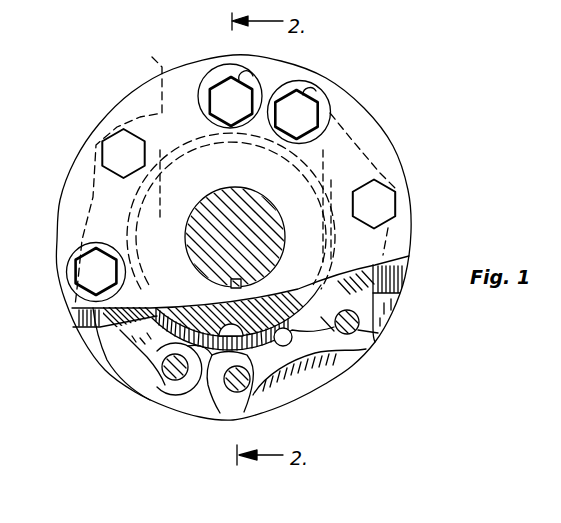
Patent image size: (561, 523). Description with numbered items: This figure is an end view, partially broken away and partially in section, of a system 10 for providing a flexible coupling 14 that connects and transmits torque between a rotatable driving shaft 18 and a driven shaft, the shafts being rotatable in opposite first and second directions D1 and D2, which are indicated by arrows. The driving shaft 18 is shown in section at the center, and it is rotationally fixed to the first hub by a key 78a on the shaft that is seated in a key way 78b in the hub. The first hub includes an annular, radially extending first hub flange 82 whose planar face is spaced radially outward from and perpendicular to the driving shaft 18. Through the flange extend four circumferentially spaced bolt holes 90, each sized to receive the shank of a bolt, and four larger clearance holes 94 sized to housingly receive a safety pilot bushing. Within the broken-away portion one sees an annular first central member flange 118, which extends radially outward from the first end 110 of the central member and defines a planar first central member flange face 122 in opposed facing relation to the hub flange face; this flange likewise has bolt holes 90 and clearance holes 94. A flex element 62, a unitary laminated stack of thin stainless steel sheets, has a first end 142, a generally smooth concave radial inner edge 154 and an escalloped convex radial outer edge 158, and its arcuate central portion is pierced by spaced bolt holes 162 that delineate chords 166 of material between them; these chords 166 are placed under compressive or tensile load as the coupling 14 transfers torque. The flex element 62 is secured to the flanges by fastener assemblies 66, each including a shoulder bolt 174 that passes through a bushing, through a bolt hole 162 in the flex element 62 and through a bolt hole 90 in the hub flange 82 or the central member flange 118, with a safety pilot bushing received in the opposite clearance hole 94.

The system 10 is at (422, 54).
The flexible coupling 14 is at (440, 110).
The driving shaft 18 is at (248, 193).
The flex element 62 is at (368, 350).
The fastener assembly 66 is at (88, 262).
The key 78a is at (236, 279).
The key way 78b is at (238, 294).
The first hub flange 82 is at (363, 122).
The bolt hole 90 is at (358, 318).
The clearance hole 94 is at (249, 76).
The first end of the central member 110 is at (250, 350).
The first central member flange 118 is at (303, 404).
The first central member flange face 122 is at (334, 374).
The first end of the flex element 142 is at (198, 403).
The radial inner edge 154 is at (279, 334).
The radial outer edge 158 is at (376, 296).
The bolt hole 162 is at (360, 332).
The chord 166 is at (70, 328).
The shoulder bolt 174 is at (221, 76).
The first direction D1 is at (457, 116).
The second direction D2 is at (472, 236).